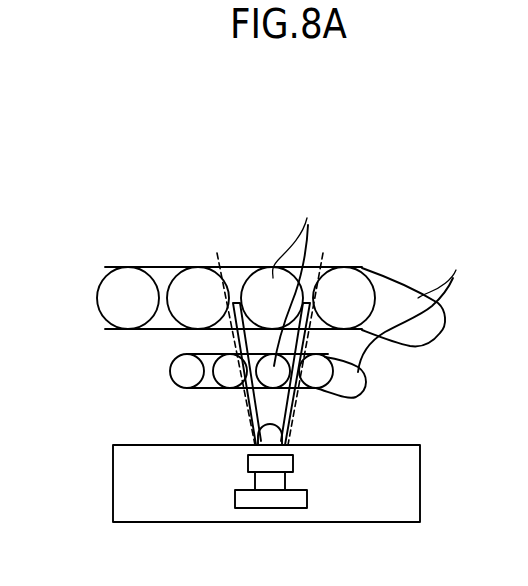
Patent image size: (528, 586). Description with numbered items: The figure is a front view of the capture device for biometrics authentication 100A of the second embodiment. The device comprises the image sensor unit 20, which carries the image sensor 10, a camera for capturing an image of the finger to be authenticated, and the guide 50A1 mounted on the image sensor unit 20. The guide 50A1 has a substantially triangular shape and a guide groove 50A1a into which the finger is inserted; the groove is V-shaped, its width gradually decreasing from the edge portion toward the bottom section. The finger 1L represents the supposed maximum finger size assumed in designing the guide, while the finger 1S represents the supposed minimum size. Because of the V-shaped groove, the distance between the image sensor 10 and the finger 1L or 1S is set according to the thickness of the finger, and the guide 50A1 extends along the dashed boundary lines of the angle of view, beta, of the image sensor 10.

The capture device for biometrics authentication 100A is at (104, 174).
The person's finger 1L is at (126, 266).
The person's finger 1S is at (170, 369).
The image sensor unit 20 is at (142, 445).
The image sensor 10 is at (273, 508).
The guide 50A1 is at (288, 423).
The guide groove 50A1a is at (241, 302).